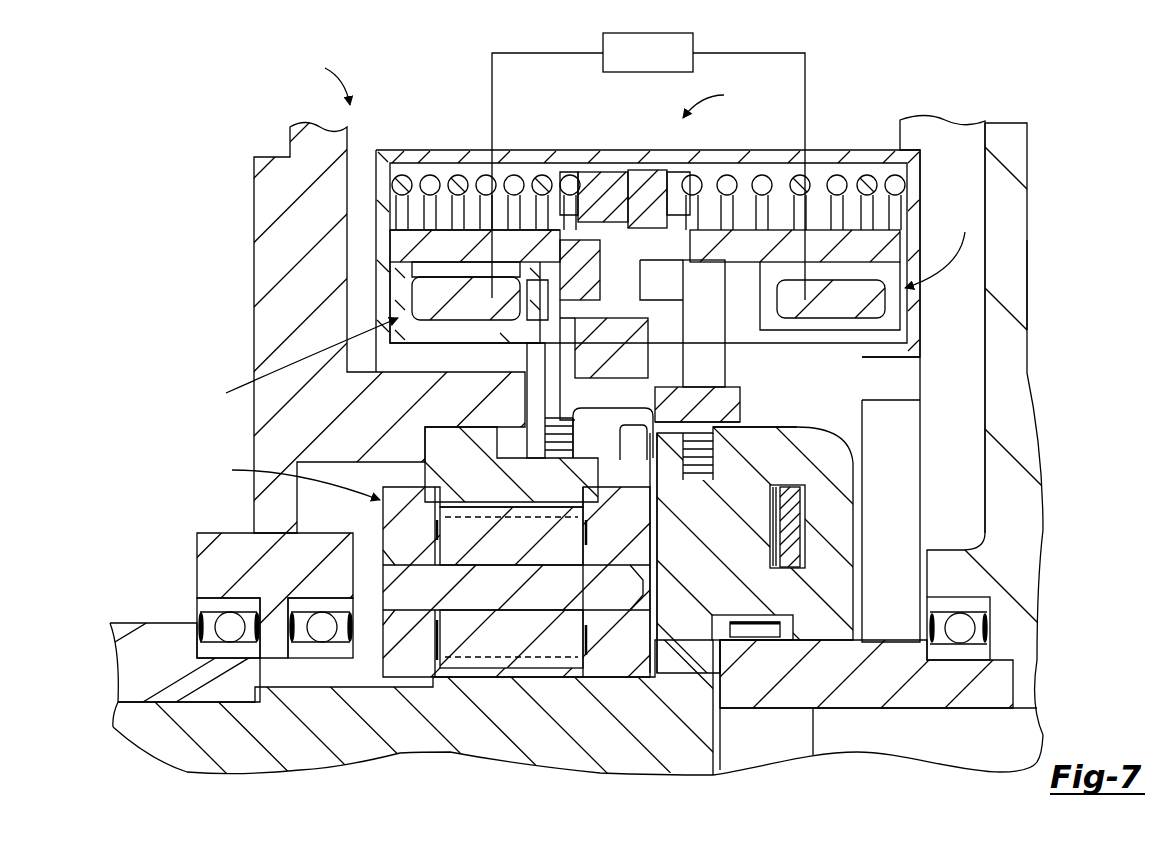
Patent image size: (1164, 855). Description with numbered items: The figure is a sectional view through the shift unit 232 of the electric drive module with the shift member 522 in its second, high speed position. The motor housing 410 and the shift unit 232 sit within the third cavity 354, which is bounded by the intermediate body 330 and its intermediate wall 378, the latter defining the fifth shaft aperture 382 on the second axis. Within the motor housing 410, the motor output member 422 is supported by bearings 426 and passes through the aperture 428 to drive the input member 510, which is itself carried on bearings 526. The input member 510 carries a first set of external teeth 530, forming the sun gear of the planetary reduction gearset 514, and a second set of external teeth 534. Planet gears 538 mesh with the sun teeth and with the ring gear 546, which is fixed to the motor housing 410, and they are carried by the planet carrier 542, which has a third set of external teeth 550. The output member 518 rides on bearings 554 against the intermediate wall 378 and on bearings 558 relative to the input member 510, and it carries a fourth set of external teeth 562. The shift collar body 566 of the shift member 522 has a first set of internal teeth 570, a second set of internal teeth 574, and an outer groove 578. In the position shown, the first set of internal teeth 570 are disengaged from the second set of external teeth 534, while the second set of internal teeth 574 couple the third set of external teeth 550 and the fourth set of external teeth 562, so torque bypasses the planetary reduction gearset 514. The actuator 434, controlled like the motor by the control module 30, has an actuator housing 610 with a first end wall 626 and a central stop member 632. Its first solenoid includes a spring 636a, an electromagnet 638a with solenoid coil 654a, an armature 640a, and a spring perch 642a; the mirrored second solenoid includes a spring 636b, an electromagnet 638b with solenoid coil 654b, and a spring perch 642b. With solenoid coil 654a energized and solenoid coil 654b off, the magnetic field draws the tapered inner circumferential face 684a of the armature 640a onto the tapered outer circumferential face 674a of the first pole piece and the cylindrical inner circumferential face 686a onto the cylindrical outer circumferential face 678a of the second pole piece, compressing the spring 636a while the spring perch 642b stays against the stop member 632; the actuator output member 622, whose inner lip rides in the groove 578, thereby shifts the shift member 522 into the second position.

The control module 30 is at (693, 45).
The shift unit 232 is at (317, 80).
The intermediate body 330 is at (1020, 205).
The third cavity 354 is at (972, 128).
The intermediate wall 378 is at (1010, 270).
The fifth shaft aperture 382 is at (1013, 633).
The motor housing 410 is at (262, 345).
The motor output member 422 is at (140, 690).
The bearings 426 is at (222, 627).
The aperture 428 is at (225, 605).
The actuator 434 is at (720, 101).
The input member 510 is at (292, 755).
The planetary reduction gearset 514 is at (423, 553).
The output member 518 is at (975, 700).
The shift member 522 is at (742, 415).
The bearings 526 is at (322, 618).
The first set of external teeth 530 is at (434, 668).
The second set of external teeth 534 is at (658, 524).
The planet gears 538 is at (508, 650).
The planet carrier 542 is at (623, 632).
The ring gear 546 is at (438, 437).
The third set of external teeth 550 is at (603, 463).
The bearings 554 is at (975, 625).
The bearings 558 is at (795, 528).
The fourth set of external teeth 562 is at (792, 432).
The shift collar body 566 is at (700, 398).
The first set of internal teeth 570 is at (562, 420).
The second set of internal teeth 574 is at (705, 478).
The groove 578 is at (615, 378).
The actuator housing 610 is at (472, 150).
The actuator output member 622 is at (660, 297).
The first end wall 626 is at (386, 187).
The stop member 632 is at (640, 178).
The spring 636a is at (430, 182).
The spring 636b is at (866, 182).
The electromagnet 638a is at (290, 360).
The electromagnet 638b is at (940, 247).
The armature 640a is at (598, 200).
The spring perch 642a is at (584, 178).
The spring perch 642b is at (683, 183).
The solenoid coil 654a is at (452, 314).
The solenoid coil 654b is at (847, 308).
The outer circumferential face 674a is at (413, 262).
The outer circumferential face 678a is at (585, 252).
The inner circumferential face 684a is at (430, 292).
The inner circumferential face 686a is at (548, 298).